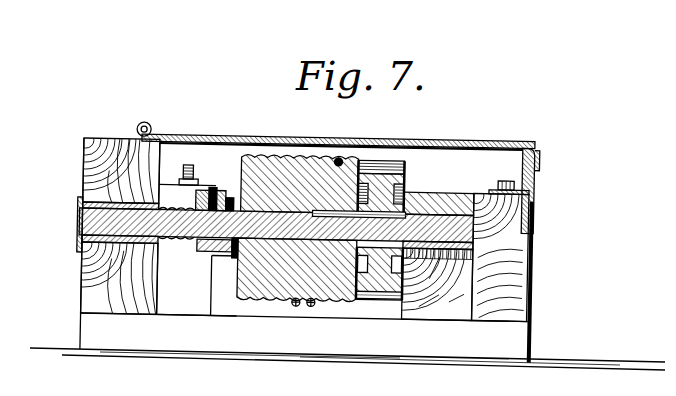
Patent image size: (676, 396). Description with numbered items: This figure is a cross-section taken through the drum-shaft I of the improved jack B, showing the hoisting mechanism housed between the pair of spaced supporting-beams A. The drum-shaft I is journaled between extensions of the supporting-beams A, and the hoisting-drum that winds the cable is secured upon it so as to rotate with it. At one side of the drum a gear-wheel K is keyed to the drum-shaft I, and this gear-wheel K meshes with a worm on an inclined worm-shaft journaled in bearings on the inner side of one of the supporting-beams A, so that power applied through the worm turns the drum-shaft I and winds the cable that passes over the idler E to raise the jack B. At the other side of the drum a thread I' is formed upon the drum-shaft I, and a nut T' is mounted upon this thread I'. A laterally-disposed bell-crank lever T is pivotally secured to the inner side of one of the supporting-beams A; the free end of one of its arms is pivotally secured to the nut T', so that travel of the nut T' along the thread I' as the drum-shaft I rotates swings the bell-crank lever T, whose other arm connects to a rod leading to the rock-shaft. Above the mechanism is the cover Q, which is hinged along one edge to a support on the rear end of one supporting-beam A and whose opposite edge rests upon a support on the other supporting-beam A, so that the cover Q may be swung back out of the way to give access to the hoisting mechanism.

The supporting-beams A is at (93, 275).
The drum-shaft I is at (263, 224).
The thread I' is at (200, 252).
The bell-crank lever T is at (207, 181).
The nut T' is at (208, 271).
The jack B is at (197, 299).
The idler E is at (272, 156).
The cover Q is at (334, 134).
The gear-wheel K is at (404, 158).